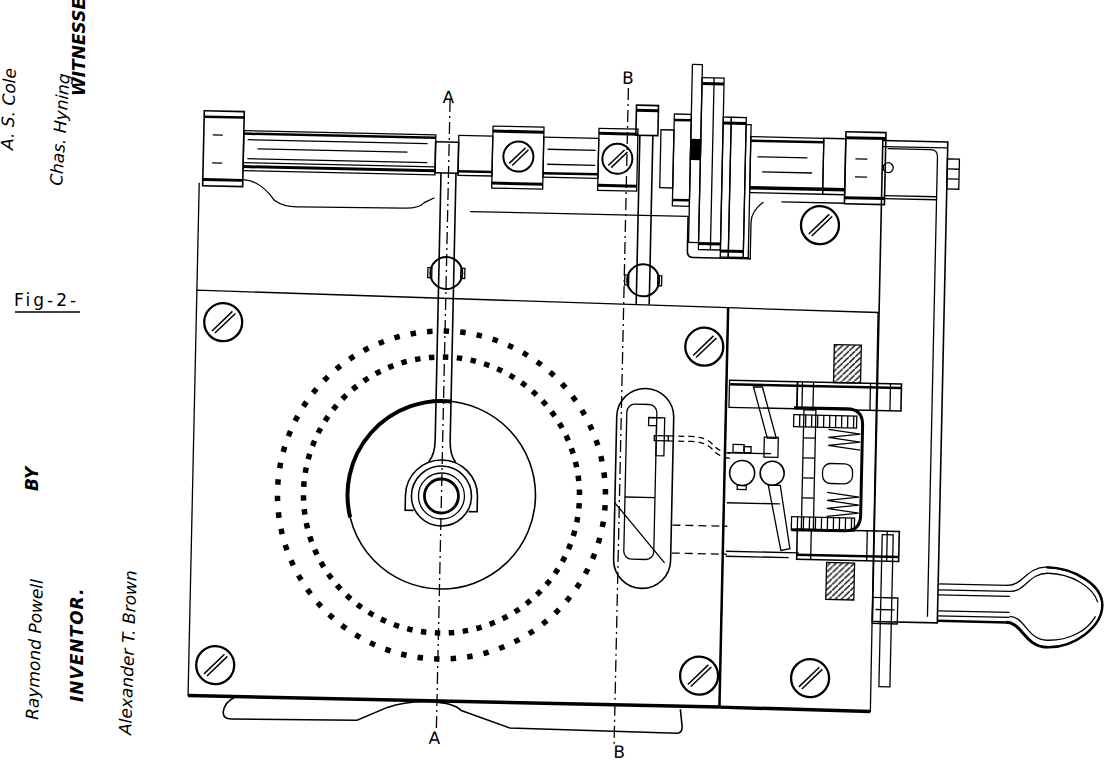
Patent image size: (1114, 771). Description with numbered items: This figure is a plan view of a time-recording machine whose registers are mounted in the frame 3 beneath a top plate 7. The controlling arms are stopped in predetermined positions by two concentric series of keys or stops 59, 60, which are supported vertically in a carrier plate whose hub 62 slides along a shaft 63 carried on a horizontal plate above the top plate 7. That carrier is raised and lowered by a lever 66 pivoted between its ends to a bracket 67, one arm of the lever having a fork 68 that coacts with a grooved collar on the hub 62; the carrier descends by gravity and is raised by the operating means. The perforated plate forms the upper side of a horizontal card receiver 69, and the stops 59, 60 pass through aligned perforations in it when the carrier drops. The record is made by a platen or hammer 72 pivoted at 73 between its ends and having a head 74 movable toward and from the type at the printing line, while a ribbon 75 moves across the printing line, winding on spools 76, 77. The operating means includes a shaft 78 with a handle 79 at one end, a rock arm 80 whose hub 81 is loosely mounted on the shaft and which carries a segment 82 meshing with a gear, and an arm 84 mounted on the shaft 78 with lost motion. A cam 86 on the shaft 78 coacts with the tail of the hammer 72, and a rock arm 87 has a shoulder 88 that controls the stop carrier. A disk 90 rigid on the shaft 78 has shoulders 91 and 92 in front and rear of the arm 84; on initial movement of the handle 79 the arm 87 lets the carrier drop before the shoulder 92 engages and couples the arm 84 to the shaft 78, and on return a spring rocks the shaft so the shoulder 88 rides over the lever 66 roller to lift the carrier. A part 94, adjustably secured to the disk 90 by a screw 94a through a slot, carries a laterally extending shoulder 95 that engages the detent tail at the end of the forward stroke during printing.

The frame 3 is at (771, 699).
The top plate 7 is at (198, 265).
The keys or stops (outer series) 59 is at (300, 471).
The keys or stops (inner series) 60 is at (276, 486).
The hub 62 is at (429, 519).
The shaft 63 is at (451, 504).
The lever 66 is at (451, 236).
The bracket 67 is at (460, 276).
The fork 68 is at (478, 492).
The card receiver 69 is at (693, 717).
The platen (hammer) 72 is at (648, 458).
The pivot 73 is at (657, 280).
The head 74 is at (657, 482).
The ribbon 75 is at (743, 374).
The spool 76 is at (823, 553).
The spool 77 is at (869, 377).
The shaft 78 is at (325, 137).
The handle 79 is at (944, 461).
The rock arm 80 is at (752, 130).
The hub 81 is at (797, 133).
The segment 82 is at (748, 247).
The arm 84 is at (797, 212).
The cam 86 is at (645, 101).
The rock arm 87 is at (478, 124).
The shoulder 88 is at (449, 181).
The disk 90 is at (713, 80).
The shoulder 91 is at (752, 128).
The shoulder 92 is at (725, 248).
The part 94 is at (690, 100).
The screw 94a is at (691, 134).
The shoulder 95 is at (690, 206).